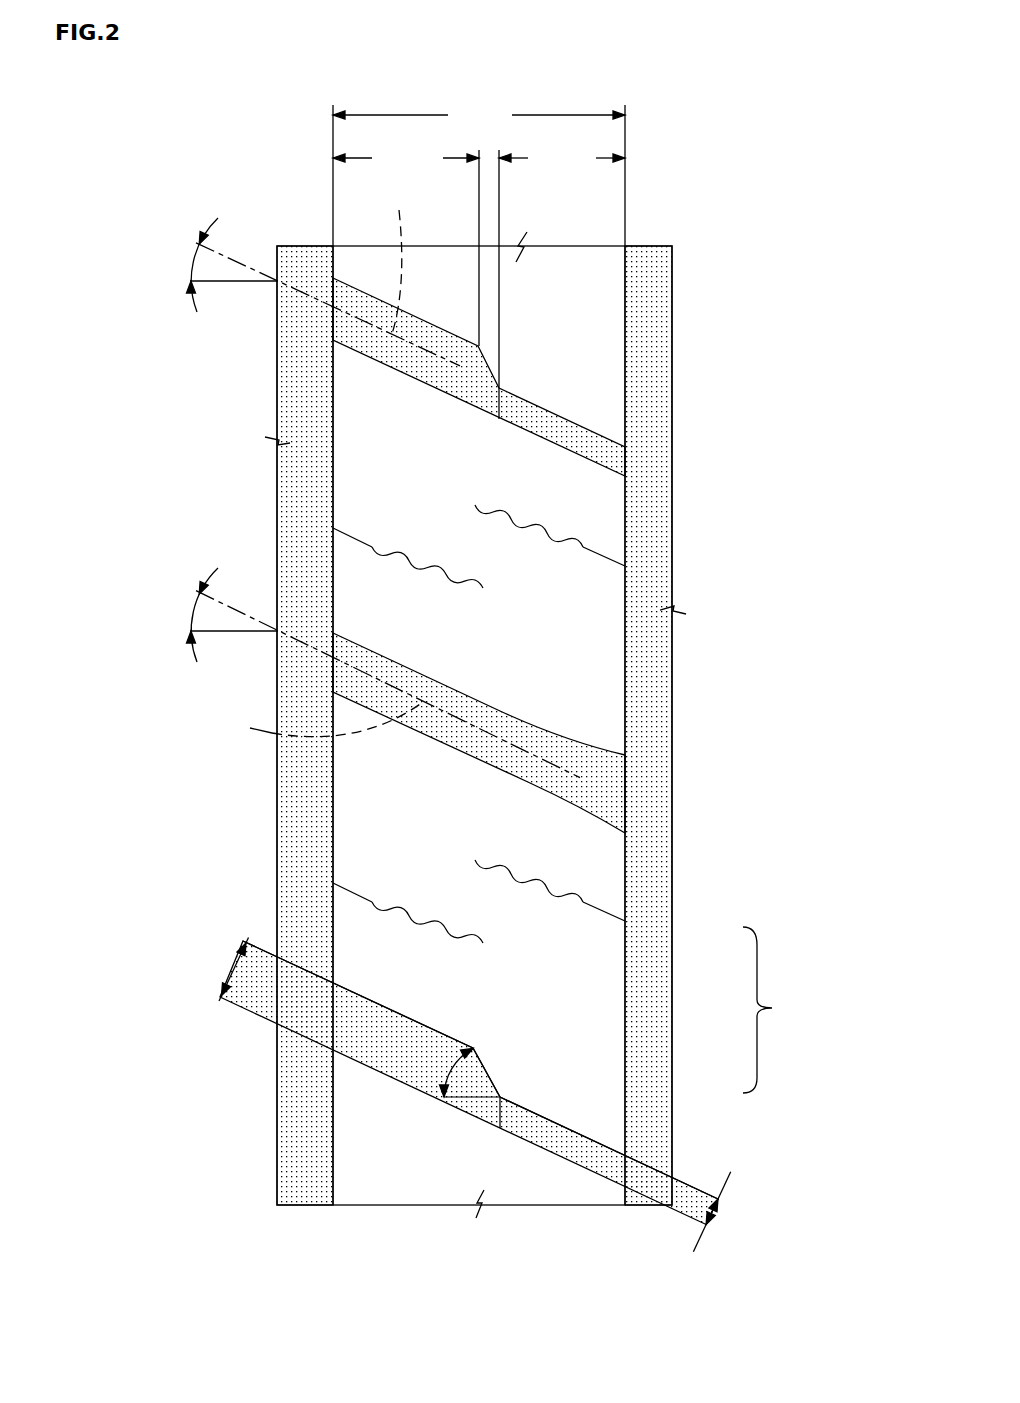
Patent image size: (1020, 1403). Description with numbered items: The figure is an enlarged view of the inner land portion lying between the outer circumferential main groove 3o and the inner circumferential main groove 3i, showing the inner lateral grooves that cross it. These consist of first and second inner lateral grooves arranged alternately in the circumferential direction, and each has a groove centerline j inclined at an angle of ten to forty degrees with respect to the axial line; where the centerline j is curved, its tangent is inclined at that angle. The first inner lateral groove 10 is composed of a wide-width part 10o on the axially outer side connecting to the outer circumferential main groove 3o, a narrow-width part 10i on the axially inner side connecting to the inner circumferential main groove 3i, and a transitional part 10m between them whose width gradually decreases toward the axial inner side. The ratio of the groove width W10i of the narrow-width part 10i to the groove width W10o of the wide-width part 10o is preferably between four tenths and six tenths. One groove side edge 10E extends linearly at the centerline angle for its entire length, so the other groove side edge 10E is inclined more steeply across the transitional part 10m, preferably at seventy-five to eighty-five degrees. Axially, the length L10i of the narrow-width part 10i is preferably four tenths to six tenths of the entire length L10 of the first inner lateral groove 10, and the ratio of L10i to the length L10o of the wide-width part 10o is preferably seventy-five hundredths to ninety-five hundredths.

The outer circumferential main groove 3o is at (300, 272).
The inner circumferential main groove 3i is at (655, 272).
The first inner lateral groove 10 is at (514, 1113).
The wide-width part 10o is at (407, 1020).
The transitional part 10m is at (487, 1072).
The narrow-width part 10i is at (547, 1113).
The groove side edge 10E is at (603, 1145).
The axial entire length of the first inner lateral groove L10 is at (479, 116).
The axial length of the wide-width part L10o is at (406, 246).
The axial length of the narrow-width part L10i is at (562, 267).
The groove width of the wide-width part W10o is at (207, 969).
The groove width of the narrow-width part W10i is at (735, 1212).
The groove centerline j is at (331, 464).